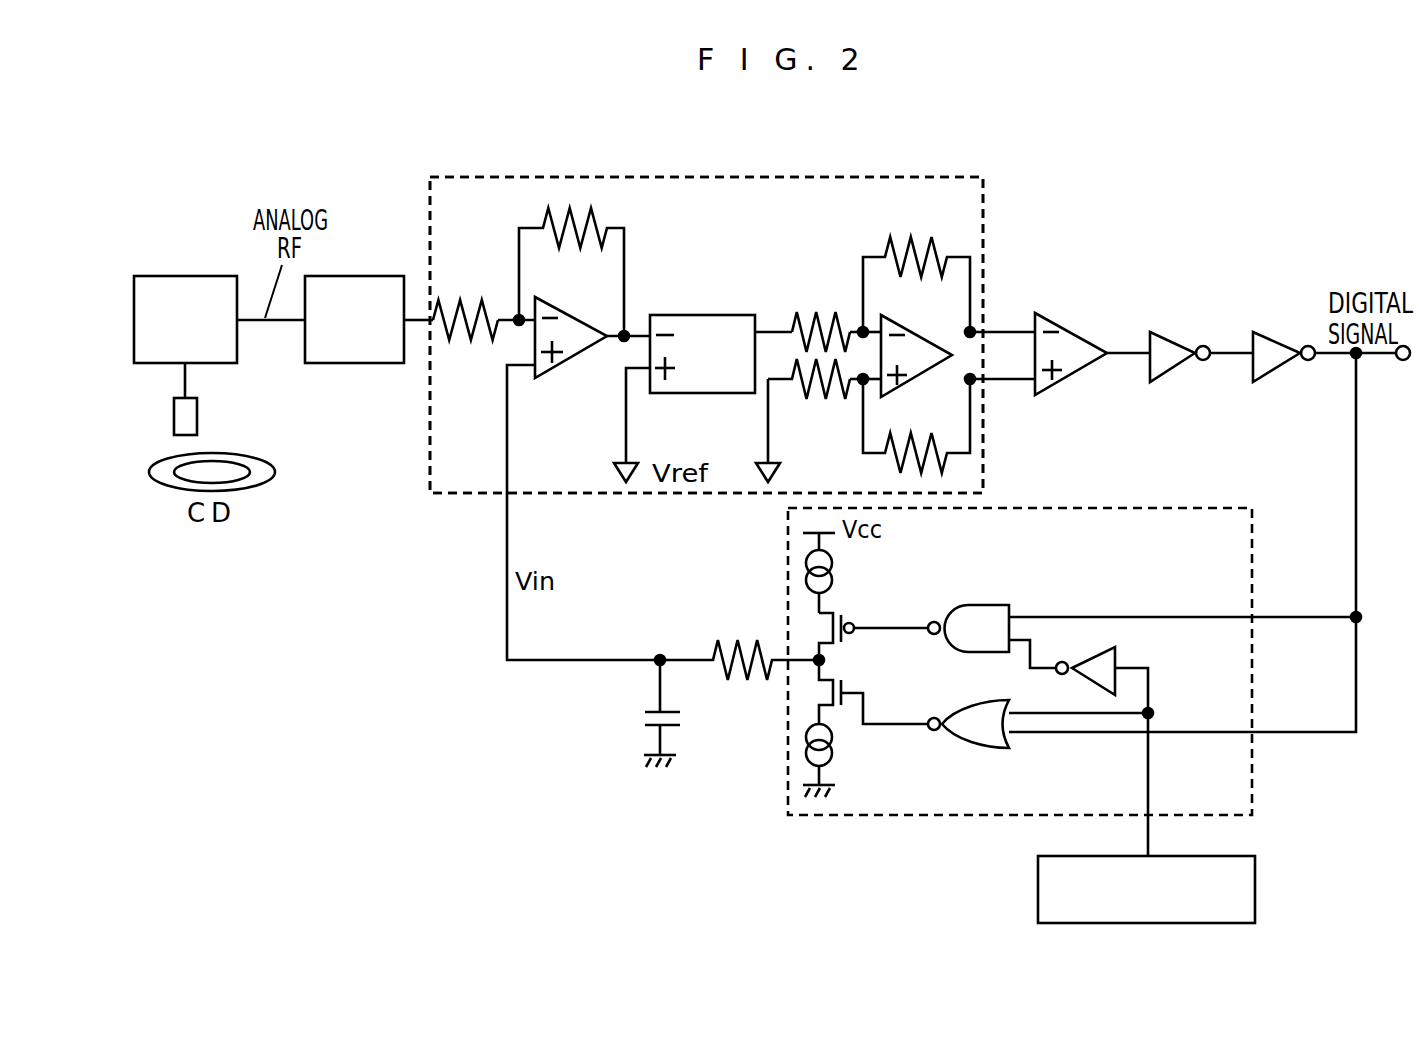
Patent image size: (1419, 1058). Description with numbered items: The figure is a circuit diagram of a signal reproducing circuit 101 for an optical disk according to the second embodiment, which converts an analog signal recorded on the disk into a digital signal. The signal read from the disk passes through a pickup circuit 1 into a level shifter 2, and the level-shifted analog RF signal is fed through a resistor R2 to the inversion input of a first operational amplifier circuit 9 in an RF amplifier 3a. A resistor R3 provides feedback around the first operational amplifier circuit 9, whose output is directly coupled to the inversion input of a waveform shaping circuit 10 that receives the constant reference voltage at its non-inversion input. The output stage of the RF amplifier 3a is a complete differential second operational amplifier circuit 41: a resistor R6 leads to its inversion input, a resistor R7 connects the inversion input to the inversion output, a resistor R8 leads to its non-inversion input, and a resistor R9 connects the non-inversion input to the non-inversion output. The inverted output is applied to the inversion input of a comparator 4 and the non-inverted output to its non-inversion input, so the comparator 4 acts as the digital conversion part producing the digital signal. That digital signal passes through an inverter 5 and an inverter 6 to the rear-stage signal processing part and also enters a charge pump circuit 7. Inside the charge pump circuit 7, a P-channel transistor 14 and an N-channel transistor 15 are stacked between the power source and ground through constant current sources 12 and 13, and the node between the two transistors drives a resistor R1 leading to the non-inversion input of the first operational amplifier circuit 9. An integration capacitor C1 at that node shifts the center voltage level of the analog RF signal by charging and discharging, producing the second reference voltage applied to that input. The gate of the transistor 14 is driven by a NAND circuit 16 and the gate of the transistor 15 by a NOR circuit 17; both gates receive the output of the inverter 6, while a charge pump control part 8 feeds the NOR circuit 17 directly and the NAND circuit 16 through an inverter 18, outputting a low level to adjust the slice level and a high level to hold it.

The signal reproducing circuit 101 is at (423, 152).
The pickup circuit 1 is at (217, 363).
The level shifter 2 is at (368, 363).
The RF amplifier 3a is at (710, 177).
The first operational amplifier circuit 9 is at (580, 317).
The waveform shaping circuit 10 is at (687, 397).
The second operational amplifier circuit 41 is at (900, 321).
The comparator 4 is at (1057, 323).
The inverter 5 is at (1168, 375).
The inverter 6 is at (1272, 375).
The charge pump circuit 7 is at (1255, 523).
The charge pump control part 8 is at (1257, 884).
The constant current source 12 is at (833, 563).
The constant current source 13 is at (833, 752).
The P-channel transistor 14 is at (845, 620).
The N-channel transistor 15 is at (845, 683).
The NAND circuit 16 is at (970, 604).
The NOR circuit 17 is at (972, 750).
The inverter 18 is at (1117, 663).
The resistor R1 is at (722, 640).
The resistor R2 is at (462, 310).
The resistor R3 is at (593, 222).
The resistor R6 is at (797, 316).
The resistor R7 is at (912, 247).
The resistor R8 is at (802, 399).
The resistor R9 is at (938, 455).
The integration capacitor C1 is at (676, 712).